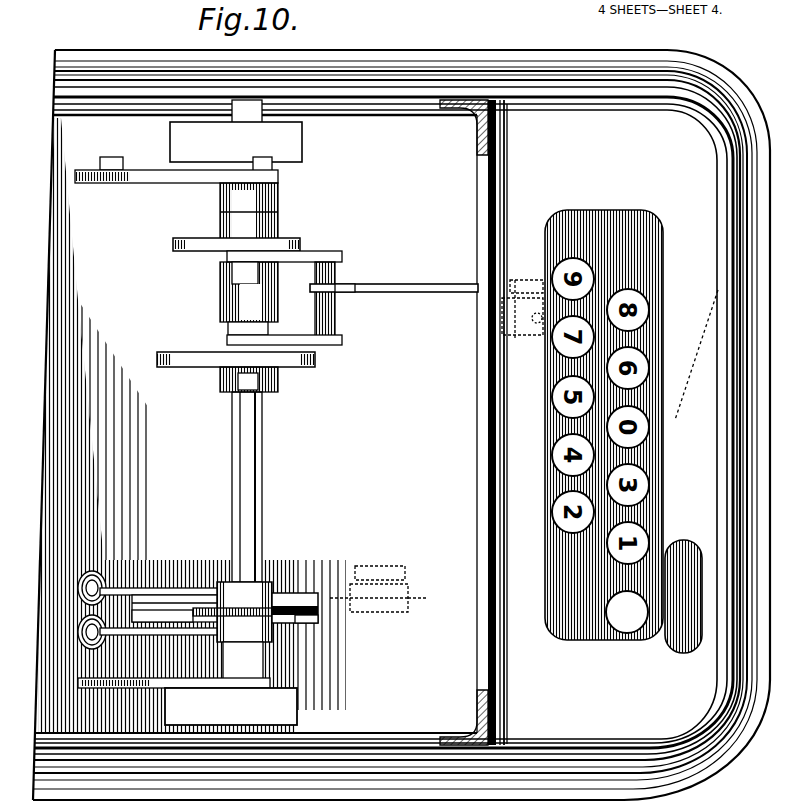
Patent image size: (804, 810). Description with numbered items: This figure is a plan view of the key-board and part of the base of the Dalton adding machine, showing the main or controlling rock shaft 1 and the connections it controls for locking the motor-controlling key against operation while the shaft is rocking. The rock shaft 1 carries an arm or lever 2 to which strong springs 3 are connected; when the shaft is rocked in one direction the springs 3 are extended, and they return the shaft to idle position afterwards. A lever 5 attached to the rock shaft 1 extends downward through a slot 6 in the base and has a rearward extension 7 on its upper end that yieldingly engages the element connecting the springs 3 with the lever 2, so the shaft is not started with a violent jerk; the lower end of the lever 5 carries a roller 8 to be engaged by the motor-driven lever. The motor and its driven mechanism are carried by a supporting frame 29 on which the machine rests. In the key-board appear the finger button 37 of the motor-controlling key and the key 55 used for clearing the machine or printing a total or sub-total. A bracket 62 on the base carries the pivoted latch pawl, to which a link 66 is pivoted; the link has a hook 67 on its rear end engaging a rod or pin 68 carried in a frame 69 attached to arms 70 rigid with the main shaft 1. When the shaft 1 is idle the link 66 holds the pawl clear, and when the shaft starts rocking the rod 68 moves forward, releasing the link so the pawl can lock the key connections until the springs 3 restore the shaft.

The rock shaft 1 is at (262, 487).
The arm or lever 2 is at (268, 622).
The springs 3 is at (87, 612).
The lever 5 is at (300, 592).
The slot 6 is at (318, 620).
The rearward extension 7 is at (128, 588).
The roller 8 is at (391, 589).
The supporting frame 29 is at (700, 774).
The finger button 37 is at (683, 638).
The key 55 is at (627, 633).
The bracket 62 is at (508, 334).
The link 66 is at (394, 304).
The hook 67 is at (348, 294).
The rod or pin 68 is at (343, 258).
The frame 69 is at (322, 346).
The arms 70 is at (192, 252).